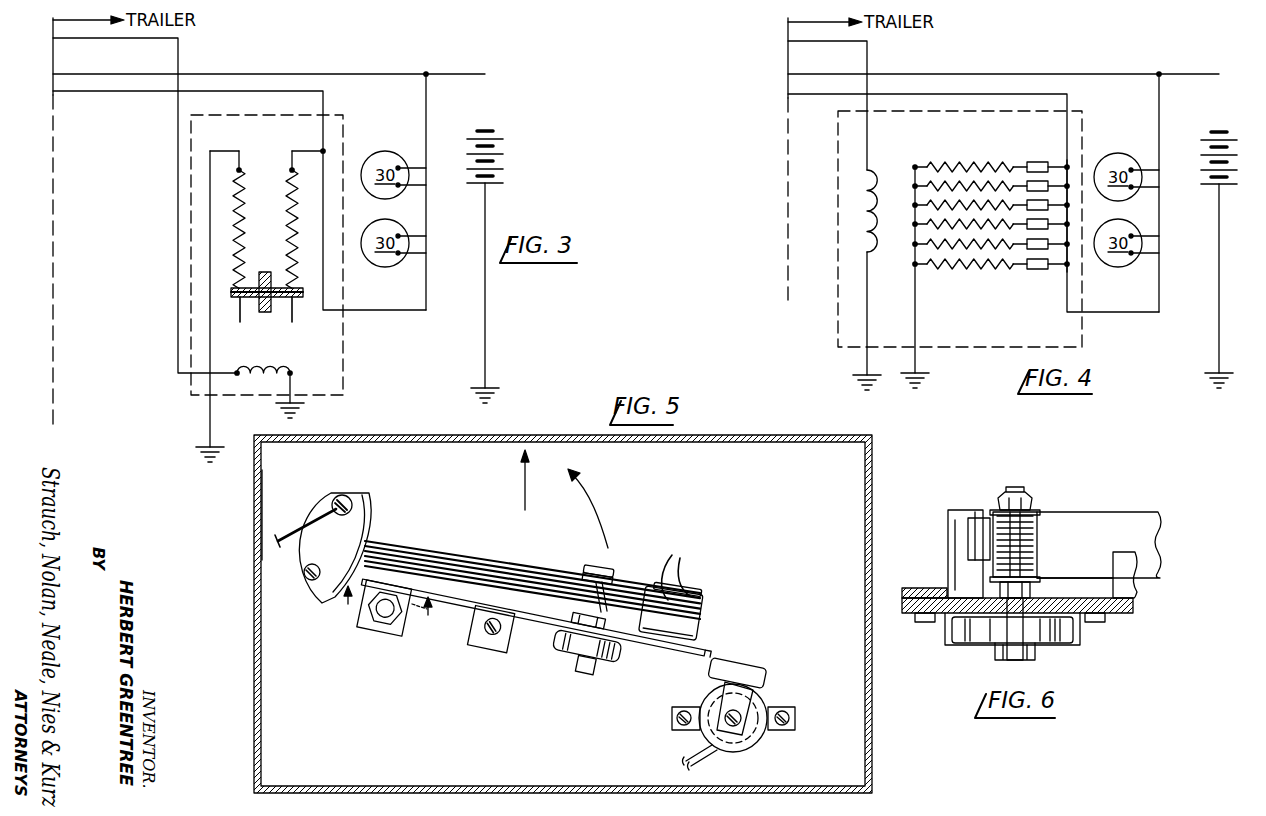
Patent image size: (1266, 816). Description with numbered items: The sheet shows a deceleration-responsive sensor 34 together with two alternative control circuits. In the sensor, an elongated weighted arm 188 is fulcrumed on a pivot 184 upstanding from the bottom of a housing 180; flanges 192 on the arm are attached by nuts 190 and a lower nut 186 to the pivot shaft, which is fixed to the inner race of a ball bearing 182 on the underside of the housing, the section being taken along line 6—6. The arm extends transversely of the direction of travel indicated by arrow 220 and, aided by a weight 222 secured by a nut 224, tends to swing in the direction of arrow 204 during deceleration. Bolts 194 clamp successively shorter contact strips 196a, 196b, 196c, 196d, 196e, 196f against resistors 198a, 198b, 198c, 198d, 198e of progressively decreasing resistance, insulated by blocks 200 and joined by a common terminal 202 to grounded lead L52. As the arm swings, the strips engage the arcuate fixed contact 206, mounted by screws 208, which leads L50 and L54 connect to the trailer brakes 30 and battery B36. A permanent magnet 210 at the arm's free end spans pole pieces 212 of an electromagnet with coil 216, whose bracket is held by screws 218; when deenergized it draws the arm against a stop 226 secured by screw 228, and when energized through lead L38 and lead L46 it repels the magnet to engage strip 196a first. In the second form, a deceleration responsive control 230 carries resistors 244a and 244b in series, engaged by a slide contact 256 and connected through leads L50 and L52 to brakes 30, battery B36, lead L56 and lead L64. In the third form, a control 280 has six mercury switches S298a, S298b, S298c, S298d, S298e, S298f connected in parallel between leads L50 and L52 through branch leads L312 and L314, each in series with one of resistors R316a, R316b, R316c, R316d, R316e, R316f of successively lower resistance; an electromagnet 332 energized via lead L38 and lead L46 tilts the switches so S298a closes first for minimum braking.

In FIG. 3, the lead L38 is at (178, 350).
In FIG. 3, the lead wire L64 is at (329, 73).
In FIG. 4, the lead wire L64 is at (1069, 73).
In FIG. 3, the lead L50 is at (326, 160).
In FIG. 4, the lead L50 is at (1066, 109).
In FIG. 3, the lead L54 is at (425, 110).
In FIG. 4, the lead L54 is at (1158, 111).
In FIG. 3, the lead wire L56 is at (485, 327).
In FIG. 4, the lead wire L56 is at (1219, 362).
In FIG. 3, the lead L52 is at (209, 426).
In FIG. 4, the lead L52 is at (917, 363).
In FIG. 3, the lead L46 is at (292, 383).
In FIG. 4, the lead L46 is at (866, 369).
In FIG. 3, the trailer brakes 30 is at (393, 209).
In FIG. 4, the trailer brakes 30 is at (1126, 210).
In FIG. 3, the battery B36 is at (487, 160).
In FIG. 4, the battery B36 is at (1232, 144).
In FIG. 3, the deceleration responsive control 230 is at (344, 368).
In FIG. 3, the slide contact 256 is at (265, 272).
In FIG. 3, the resistor 244a is at (300, 300).
In FIG. 3, the resistor 244b is at (245, 300).
In FIG. 4, the control unit 280 is at (837, 303).
In FIG. 4, the electromagnet 332 is at (838, 218).
In FIG. 4, the branch lead L312 is at (1067, 214).
In FIG. 4, the branch lead L314 is at (1020, 266).
In FIG. 4, the resistor R316a is at (945, 266).
In FIG. 4, the resistor R316b is at (945, 245).
In FIG. 4, the resistor R316c is at (928, 167).
In FIG. 4, the resistor R316d is at (940, 186).
In FIG. 4, the resistor R316e is at (940, 205).
In FIG. 4, the resistor R316f is at (945, 224).
In FIG. 4, the mercury switch S298a is at (1042, 269).
In FIG. 4, the mercury switch S298b is at (1044, 248).
In FIG. 4, the mercury switch S298c is at (1042, 227).
In FIG. 4, the mercury switch S298d is at (1040, 208).
In FIG. 4, the mercury switch S298e is at (1040, 184).
In FIG. 4, the mercury switch S298f is at (1040, 165).
In FIG. 5, the sensor 34 is at (708, 459).
In FIG. 5, the housing 180 is at (254, 518).
In FIG. 5, the fixed contact 206 is at (357, 494).
In FIG. 6, the fixed contact 206 is at (948, 556).
In FIG. 5, the mounting screw 208 is at (331, 503).
In FIG. 6, the mounting screw 208 is at (928, 584).
In FIG. 5, the contact strip 196a is at (433, 567).
In FIG. 6, the contact strip 196a is at (968, 540).
In FIG. 5, the contact strip 196b is at (425, 562).
In FIG. 5, the contact strip 196c is at (415, 556).
In FIG. 5, the contact strip 196d is at (373, 552).
In FIG. 5, the contact strip 196e is at (372, 547).
In FIG. 5, the contact strip 196f is at (372, 542).
In FIG. 5, the arrow 220 is at (524, 486).
In FIG. 5, the arrow 204 is at (586, 496).
In FIG. 5, the resistor 198a is at (652, 578).
In FIG. 5, the resistor 198b is at (647, 586).
In FIG. 5, the resistor 198c is at (645, 580).
In FIG. 5, the resistor 198d is at (681, 566).
In FIG. 5, the resistor 198e is at (672, 558).
In FIG. 5, the blocks 200 is at (690, 632).
In FIG. 5, the common terminal 202 is at (690, 592).
In FIG. 5, the arm 188 is at (632, 640).
In FIG. 6, the arm 188 is at (1130, 512).
In FIG. 5, the nuts 190 is at (368, 622).
In FIG. 6, the nuts 190 is at (1028, 508).
In FIG. 5, the pivot 184 is at (394, 620).
In FIG. 6, the pivot 184 is at (1016, 488).
In FIG. 5, the flanges 192 is at (404, 636).
In FIG. 6, the flanges 192 is at (1037, 540).
In FIG. 5, the section line 6 is at (385, 613).
In FIG. 5, the screw 228 is at (480, 645).
In FIG. 5, the stop 226 is at (494, 652).
In FIG. 6, the stop 226 is at (1134, 590).
In FIG. 5, the bolts 194 is at (596, 668).
In FIG. 5, the weight 222 is at (562, 648).
In FIG. 5, the nut 224 is at (574, 670).
In FIG. 5, the permanent magnet 210 is at (760, 668).
In FIG. 5, the pole pieces 212 is at (724, 688).
In FIG. 5, the coil 216 is at (758, 741).
In FIG. 5, the screws 218 is at (671, 718).
In FIG. 6, the nut 186 is at (1030, 590).
In FIG. 6, the ball bearing 182 is at (1073, 640).